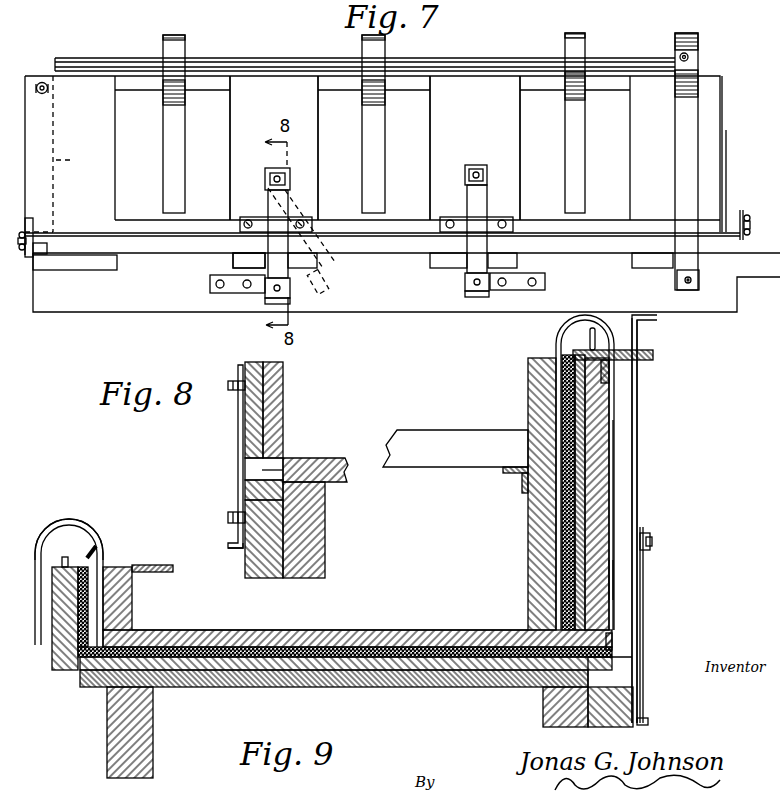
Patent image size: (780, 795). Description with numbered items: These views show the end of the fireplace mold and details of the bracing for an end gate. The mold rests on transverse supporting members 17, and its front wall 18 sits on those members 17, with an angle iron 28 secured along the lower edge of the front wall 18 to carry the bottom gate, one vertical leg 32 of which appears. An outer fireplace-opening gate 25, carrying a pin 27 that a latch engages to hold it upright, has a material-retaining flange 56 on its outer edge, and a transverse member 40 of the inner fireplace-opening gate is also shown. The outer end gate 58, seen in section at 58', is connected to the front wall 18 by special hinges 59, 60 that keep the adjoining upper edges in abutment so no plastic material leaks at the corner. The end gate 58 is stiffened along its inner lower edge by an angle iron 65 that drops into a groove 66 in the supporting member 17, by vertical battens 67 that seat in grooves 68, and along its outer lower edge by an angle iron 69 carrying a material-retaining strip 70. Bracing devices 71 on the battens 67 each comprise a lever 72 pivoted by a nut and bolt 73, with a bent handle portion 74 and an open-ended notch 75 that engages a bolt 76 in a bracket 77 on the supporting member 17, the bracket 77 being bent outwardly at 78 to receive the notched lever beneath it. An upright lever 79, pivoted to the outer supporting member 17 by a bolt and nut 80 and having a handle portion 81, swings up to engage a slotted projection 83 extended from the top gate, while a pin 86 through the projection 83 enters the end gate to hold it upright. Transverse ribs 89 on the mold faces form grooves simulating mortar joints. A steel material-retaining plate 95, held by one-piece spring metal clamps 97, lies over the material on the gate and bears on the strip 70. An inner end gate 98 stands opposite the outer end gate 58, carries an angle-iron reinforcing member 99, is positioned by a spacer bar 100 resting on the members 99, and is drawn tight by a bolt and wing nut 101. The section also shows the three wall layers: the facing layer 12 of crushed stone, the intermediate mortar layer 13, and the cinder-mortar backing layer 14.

In FIG. 9, the outer layer 12 is at (176, 670).
In FIG. 9, the intermediate layer 13 is at (215, 633).
In FIG. 9, the backing layer 14 is at (390, 630).
In FIG. 7, the transverse supporting member 17 is at (48, 305).
In FIG. 8, the transverse supporting member 17 is at (300, 556).
In FIG. 9, the transverse supporting member 17 is at (107, 748).
In FIG. 7, the front wall 18 is at (180, 245).
In FIG. 8, the front wall 18 is at (340, 482).
In FIG. 9, the front wall 18 is at (427, 688).
In FIG. 9, the outer fireplace-opening gate 25 is at (52, 657).
In FIG. 9, the pin 27 is at (48, 556).
In FIG. 7, the angle iron 28 is at (38, 250).
In FIG. 7, the vertical leg 32 is at (70, 161).
In FIG. 9, the transverse member 40 is at (160, 565).
In FIG. 9, the material-retaining flange 56 is at (90, 550).
In FIG. 7, the outer end gate 58 is at (372, 165).
In FIG. 9, the outer end gate 58 is at (638, 492).
In FIG. 8, the panel section 58' is at (293, 410).
In FIG. 7, the hinge 59 is at (22, 232).
In FIG. 7, the hinge 60 is at (747, 211).
In FIG. 7, the angle iron 65 is at (541, 222).
In FIG. 9, the angle iron 65 is at (612, 645).
In FIG. 8, the groove 66 is at (262, 478).
In FIG. 9, the groove 66 is at (600, 684).
In FIG. 7, the batten 67 is at (280, 80).
In FIG. 8, the batten 67 is at (240, 368).
In FIG. 9, the batten 67 is at (625, 463).
In FIG. 7, the groove 68 is at (105, 268).
In FIG. 8, the groove 68 is at (262, 497).
In FIG. 9, the groove 68 is at (635, 694).
In FIG. 9, the angle iron 69 is at (612, 372).
In FIG. 9, the material-retaining strip 70 is at (558, 352).
In FIG. 7, the bracing device 71 is at (264, 208).
In FIG. 9, the bracing device 71 is at (644, 610).
In FIG. 7, the lever 72 is at (280, 200).
In FIG. 8, the lever 72 is at (238, 434).
In FIG. 7, the nut and bolt 73 is at (290, 178).
In FIG. 9, the nut and bolt 73 is at (652, 545).
In FIG. 7, the handle portion 74 is at (285, 302).
In FIG. 8, the handle portion 74 is at (236, 547).
In FIG. 7, the open-ended notch 75 is at (325, 280).
In FIG. 7, the bolt 76 is at (292, 290).
In FIG. 8, the bolt 76 is at (228, 518).
In FIG. 7, the bracket 77 is at (230, 293).
In FIG. 7, the outwardly bent portion 78 is at (266, 275).
In FIG. 7, the upright lever 79 is at (690, 118).
In FIG. 9, the upright lever 79 is at (640, 500).
In FIG. 7, the bolt and nut 80 is at (677, 290).
In FIG. 7, the handle portion 81 is at (698, 35).
In FIG. 9, the handle portion 81 is at (657, 317).
In FIG. 9, the projection 83 is at (655, 356).
In FIG. 7, the pin 86 is at (680, 52).
In FIG. 9, the pin 86 is at (597, 338).
In FIG. 9, the transverse rib 89 is at (210, 657).
In FIG. 7, the material-retaining plate 95 is at (130, 68).
In FIG. 9, the material-retaining plate 95 is at (97, 568).
In FIG. 7, the spring metal clamp 97 is at (185, 40).
In FIG. 9, the spring metal clamp 97 is at (69, 519).
In FIG. 9, the inner end gate 98 is at (530, 385).
In FIG. 9, the longitudinal reinforcing member 99 is at (516, 482).
In FIG. 9, the spacer bar 100 is at (435, 448).
In FIG. 7, the bolt and wing nut 101 is at (38, 84).